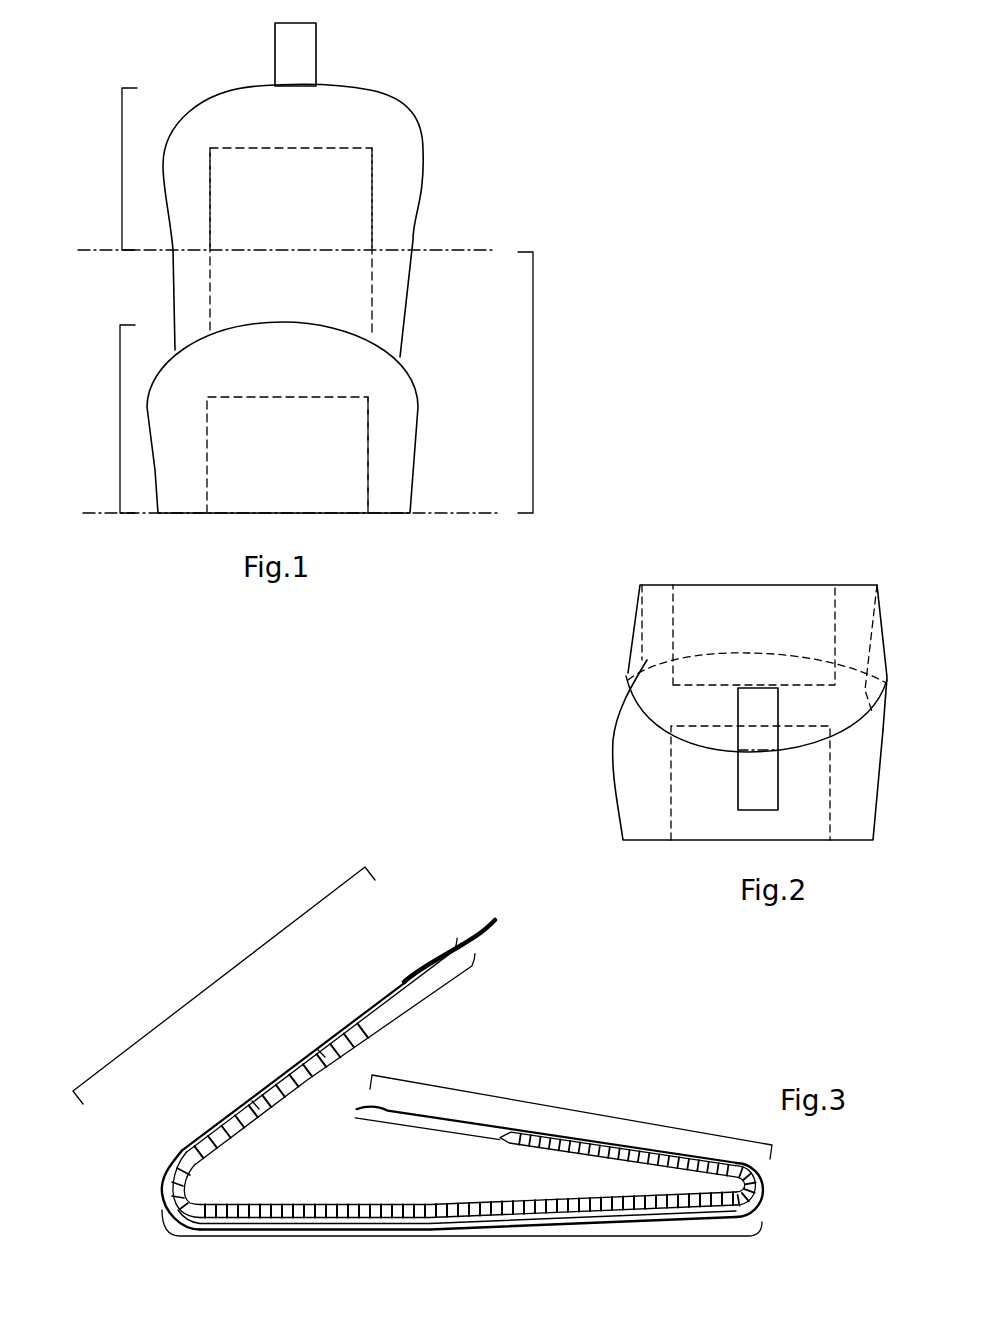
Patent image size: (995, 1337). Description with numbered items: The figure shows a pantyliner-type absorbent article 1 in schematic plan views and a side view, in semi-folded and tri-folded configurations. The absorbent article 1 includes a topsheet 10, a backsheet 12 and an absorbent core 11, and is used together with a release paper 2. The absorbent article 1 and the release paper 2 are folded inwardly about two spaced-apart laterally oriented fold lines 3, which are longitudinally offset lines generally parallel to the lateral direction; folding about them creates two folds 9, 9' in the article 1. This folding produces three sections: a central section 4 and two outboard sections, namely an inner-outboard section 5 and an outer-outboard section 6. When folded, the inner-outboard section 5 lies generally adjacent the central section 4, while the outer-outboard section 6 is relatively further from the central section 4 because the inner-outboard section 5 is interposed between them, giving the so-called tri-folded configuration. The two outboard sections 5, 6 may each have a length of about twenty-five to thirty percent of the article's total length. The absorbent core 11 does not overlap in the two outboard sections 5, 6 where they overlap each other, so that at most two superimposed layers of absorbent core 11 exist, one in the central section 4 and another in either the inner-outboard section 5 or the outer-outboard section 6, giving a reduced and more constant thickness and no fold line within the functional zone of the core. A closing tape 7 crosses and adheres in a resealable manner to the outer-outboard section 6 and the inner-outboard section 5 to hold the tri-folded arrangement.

In FIG. 1, the absorbent article 1 is at (370, 91).
In FIG. 1, the release paper 2 is at (393, 432).
In FIG. 3, the release paper 2 is at (585, 1137).
In FIG. 1, the fold lines 3 is at (478, 250).
In FIG. 1, the central section 4 is at (533, 380).
In FIG. 3, the central section 4 is at (463, 1236).
In FIG. 1, the inner-outboard section 5 is at (120, 417).
In FIG. 2, the inner-outboard section 5 is at (695, 777).
In FIG. 3, the inner-outboard section 5 is at (572, 1110).
In FIG. 1, the outer-outboard section 6 is at (122, 170).
In FIG. 2, the outer-outboard section 6 is at (719, 701).
In FIG. 3, the outer-outboard section 6 is at (222, 977).
In FIG. 1, the closing tape 7 is at (288, 60).
In FIG. 2, the closing tape 7 is at (763, 705).
In FIG. 3, the closing tape 7 is at (473, 940).
In FIG. 3, the fold 9 is at (801, 1190).
In FIG. 3, the fold 9' is at (125, 1190).
In FIG. 1, the topsheet 10 is at (395, 213).
In FIG. 3, the topsheet 10 is at (387, 1053).
In FIG. 1, the absorbent core 11 is at (372, 168).
In FIG. 3, the absorbent core 11 is at (257, 1107).
In FIG. 3, the backsheet 12 is at (318, 1050).